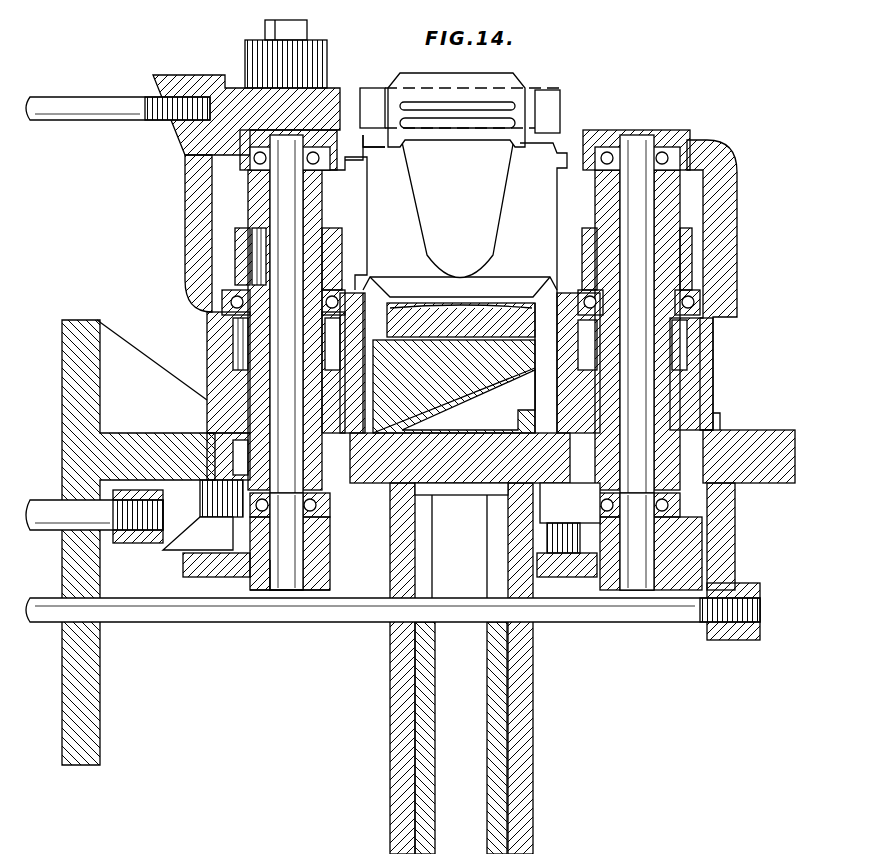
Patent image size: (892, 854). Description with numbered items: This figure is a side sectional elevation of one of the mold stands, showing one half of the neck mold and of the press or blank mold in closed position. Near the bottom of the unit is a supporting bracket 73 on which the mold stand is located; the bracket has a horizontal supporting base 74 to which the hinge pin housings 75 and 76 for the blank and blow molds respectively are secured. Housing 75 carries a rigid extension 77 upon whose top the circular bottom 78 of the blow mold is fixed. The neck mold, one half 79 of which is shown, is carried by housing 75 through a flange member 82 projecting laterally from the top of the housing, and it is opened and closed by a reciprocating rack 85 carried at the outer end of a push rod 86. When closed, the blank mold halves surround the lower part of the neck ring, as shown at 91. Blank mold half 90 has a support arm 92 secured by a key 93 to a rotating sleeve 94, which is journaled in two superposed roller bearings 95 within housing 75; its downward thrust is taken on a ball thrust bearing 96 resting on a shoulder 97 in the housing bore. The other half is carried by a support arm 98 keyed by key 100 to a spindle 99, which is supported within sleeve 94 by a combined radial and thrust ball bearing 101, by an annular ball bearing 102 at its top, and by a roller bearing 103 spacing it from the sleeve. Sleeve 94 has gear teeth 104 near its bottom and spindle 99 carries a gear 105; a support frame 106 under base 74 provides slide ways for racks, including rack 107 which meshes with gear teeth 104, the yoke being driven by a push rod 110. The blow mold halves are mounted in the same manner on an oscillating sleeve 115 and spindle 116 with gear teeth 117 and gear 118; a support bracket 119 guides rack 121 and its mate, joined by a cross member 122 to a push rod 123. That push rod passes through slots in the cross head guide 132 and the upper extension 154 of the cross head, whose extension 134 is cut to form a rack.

The supporting bracket 73 is at (107, 733).
The horizontal supporting base 74 is at (745, 442).
The hinge pin housing 75 is at (190, 280).
The hinge pin housing 76 is at (738, 280).
The rigid extension 77 is at (532, 368).
The blow mold bottom 78 is at (497, 320).
The neck mold half 79 is at (530, 80).
The flange member 82 is at (325, 135).
The reciprocating rack 85 is at (243, 86).
The push rod 86 is at (110, 101).
The blank mold half 90 is at (457, 205).
The neck ring surround 91 is at (553, 140).
The support arm 92 is at (240, 250).
The key 93 is at (245, 232).
The rotating sleeve 94 is at (240, 355).
The roller bearings 95 is at (240, 443).
The ball thrust bearing 96 is at (228, 300).
The shoulder 97 is at (208, 313).
The support arm 98 is at (320, 197).
The spindle 99 is at (280, 200).
The key 100 is at (265, 182).
The combined radial and thrust annular ball bearing 101 is at (318, 507).
The annular ball bearing 102 is at (350, 163).
The roller bearing 103 is at (335, 248).
The gear teeth 104 is at (357, 540).
The gear 105 is at (236, 580).
The support frame 106 is at (208, 578).
The reciprocating rack 107 is at (182, 548).
The push rod 110 is at (45, 492).
The oscillating sleeve 115 is at (640, 397).
The oscillating spindle 116 is at (635, 212).
The gear teeth 117 is at (690, 500).
The gear 118 is at (710, 545).
The support bracket 119 is at (683, 582).
The rack 121 is at (575, 560).
The cross member 122 is at (727, 537).
The push rod 123 is at (637, 625).
The cross head guide 132 is at (525, 752).
The cross head extension 134 is at (520, 712).
The upper extension of the cross head 154 is at (492, 557).